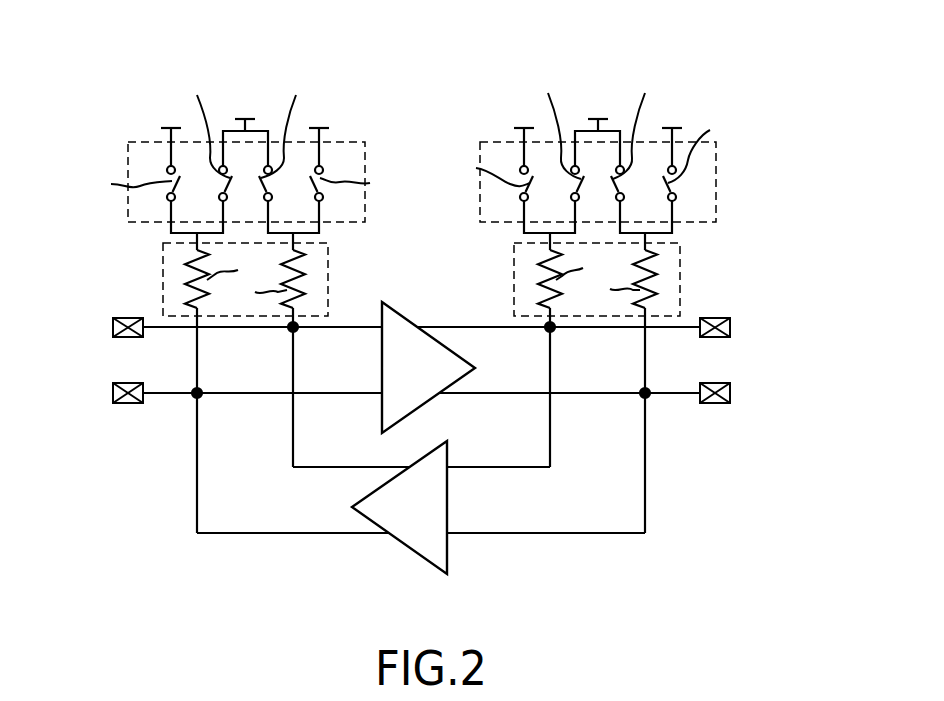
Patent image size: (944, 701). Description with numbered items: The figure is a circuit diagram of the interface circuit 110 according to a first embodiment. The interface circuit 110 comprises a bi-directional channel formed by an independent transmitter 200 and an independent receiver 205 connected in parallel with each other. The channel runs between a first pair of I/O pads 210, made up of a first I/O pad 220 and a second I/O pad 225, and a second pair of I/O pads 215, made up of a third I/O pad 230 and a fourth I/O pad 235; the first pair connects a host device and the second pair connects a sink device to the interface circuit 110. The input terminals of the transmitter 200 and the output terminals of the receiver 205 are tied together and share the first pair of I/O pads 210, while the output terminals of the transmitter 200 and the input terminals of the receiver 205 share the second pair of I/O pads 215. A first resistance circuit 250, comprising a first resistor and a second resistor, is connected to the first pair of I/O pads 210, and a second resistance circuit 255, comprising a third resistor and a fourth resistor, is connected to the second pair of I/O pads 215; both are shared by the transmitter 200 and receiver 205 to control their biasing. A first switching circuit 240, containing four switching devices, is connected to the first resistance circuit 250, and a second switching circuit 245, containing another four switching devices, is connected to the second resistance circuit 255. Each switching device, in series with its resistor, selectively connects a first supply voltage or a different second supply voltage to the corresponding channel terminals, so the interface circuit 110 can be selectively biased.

The interface circuit 110 is at (768, 75).
The transmitter 200 is at (398, 313).
The receiver 205 is at (404, 546).
The first pair of I/O pads 210 is at (108, 310).
The second pair of I/O pads 215 is at (737, 310).
The first I/O pad 220 is at (122, 317).
The second I/O pad 225 is at (131, 404).
The third I/O pad 230 is at (714, 317).
The fourth I/O pad 235 is at (708, 404).
The first switching circuit 240 is at (365, 146).
The second switching circuit 245 is at (716, 160).
The first resistance circuit 250 is at (328, 258).
The second resistance circuit 255 is at (679, 258).